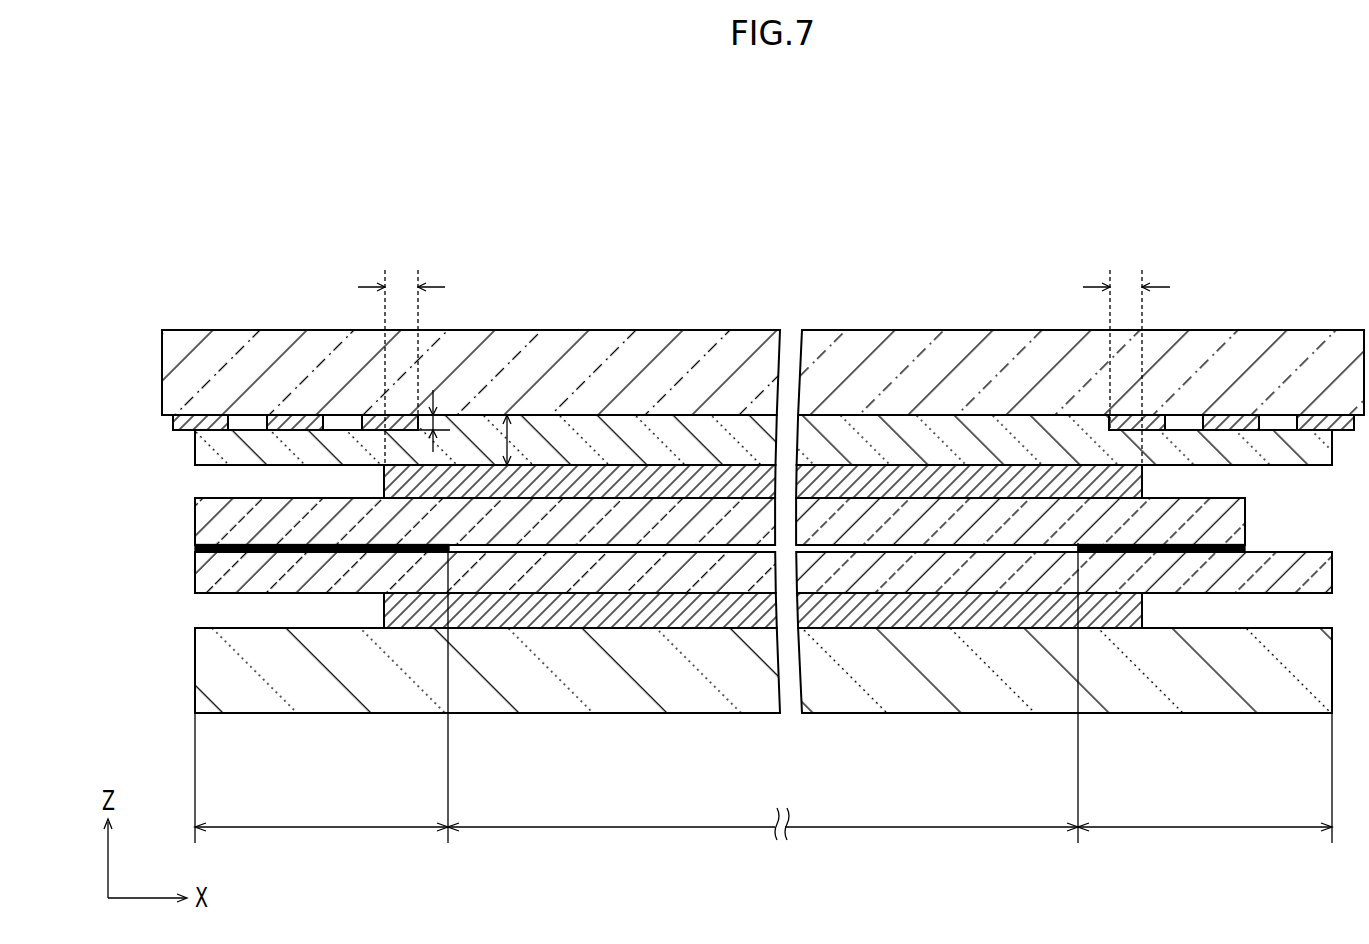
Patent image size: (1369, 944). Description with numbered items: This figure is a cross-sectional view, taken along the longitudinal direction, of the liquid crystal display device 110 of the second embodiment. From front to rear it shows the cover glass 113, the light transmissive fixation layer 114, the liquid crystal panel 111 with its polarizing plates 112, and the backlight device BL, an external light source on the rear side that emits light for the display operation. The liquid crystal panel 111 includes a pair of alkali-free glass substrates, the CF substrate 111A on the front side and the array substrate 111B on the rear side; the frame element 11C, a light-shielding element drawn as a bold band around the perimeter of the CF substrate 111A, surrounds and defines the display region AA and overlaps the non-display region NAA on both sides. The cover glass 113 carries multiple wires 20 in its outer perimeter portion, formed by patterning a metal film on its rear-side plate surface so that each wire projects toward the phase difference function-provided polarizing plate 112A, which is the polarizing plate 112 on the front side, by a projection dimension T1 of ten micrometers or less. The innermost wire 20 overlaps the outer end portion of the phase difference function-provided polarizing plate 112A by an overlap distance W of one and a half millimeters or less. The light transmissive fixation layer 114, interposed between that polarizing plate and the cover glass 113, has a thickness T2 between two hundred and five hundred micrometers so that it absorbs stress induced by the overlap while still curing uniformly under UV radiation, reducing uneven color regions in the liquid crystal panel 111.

The liquid crystal display device 110 is at (1276, 330).
The cover glass 113 is at (260, 355).
The wires 20 is at (204, 418).
The light transmissive fixation layer 114 is at (622, 433).
The phase difference function-provided polarizing plate 112A is at (730, 480).
The polarizing plate 112 is at (607, 620).
The liquid crystal panel 111 is at (763, 527).
The CF substrate 111A is at (858, 520).
The array substrate 111B is at (933, 575).
The frame element 11C is at (313, 552).
The backlight device BL is at (518, 683).
The overlap distance W is at (764, 360).
The projection dimension T1 is at (458, 413).
The thickness T2 is at (511, 440).
The non-display region NAA is at (763, 703).
The display region AA is at (763, 836).